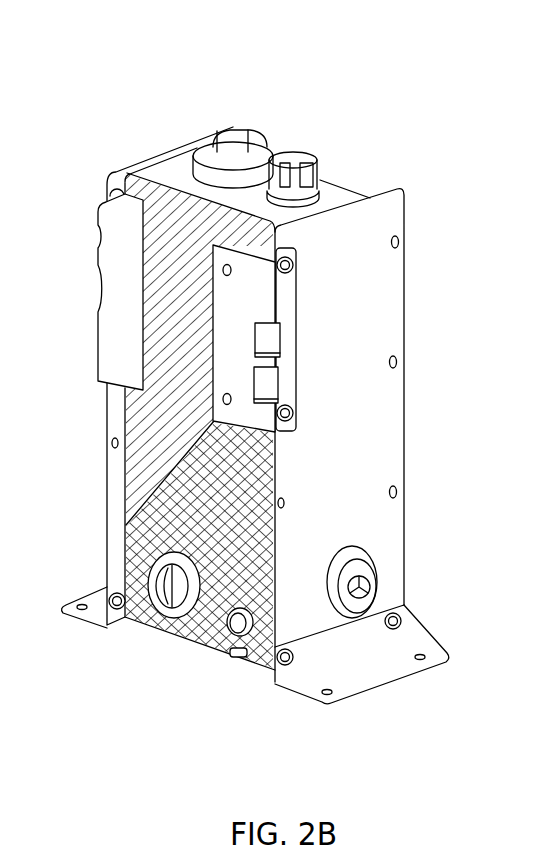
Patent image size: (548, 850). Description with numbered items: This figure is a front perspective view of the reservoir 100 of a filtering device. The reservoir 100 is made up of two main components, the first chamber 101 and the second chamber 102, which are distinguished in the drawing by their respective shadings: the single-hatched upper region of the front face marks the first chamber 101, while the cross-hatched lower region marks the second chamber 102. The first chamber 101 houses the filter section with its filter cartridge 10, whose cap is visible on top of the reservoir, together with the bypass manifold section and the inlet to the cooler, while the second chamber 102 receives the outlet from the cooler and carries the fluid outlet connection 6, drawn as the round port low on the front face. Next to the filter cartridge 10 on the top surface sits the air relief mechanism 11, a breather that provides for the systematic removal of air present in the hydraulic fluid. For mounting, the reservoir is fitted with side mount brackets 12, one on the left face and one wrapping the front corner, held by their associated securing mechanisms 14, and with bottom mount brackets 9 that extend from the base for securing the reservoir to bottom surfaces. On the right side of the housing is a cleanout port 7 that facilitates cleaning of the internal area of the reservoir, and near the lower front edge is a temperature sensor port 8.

The reservoir 100 is at (232, 60).
The filter cartridge 10 is at (256, 150).
The air relief mechanism 11 is at (305, 153).
The side mount brackets 12 is at (100, 218).
The securing mechanisms 14 is at (295, 268).
The first chamber 101 is at (153, 440).
The second chamber 102 is at (152, 540).
The cleanout port 7 is at (358, 553).
The fluid outlet connection 6 is at (173, 614).
The temperature sensor port 8 is at (232, 631).
The bottom mount brackets 9 is at (302, 678).